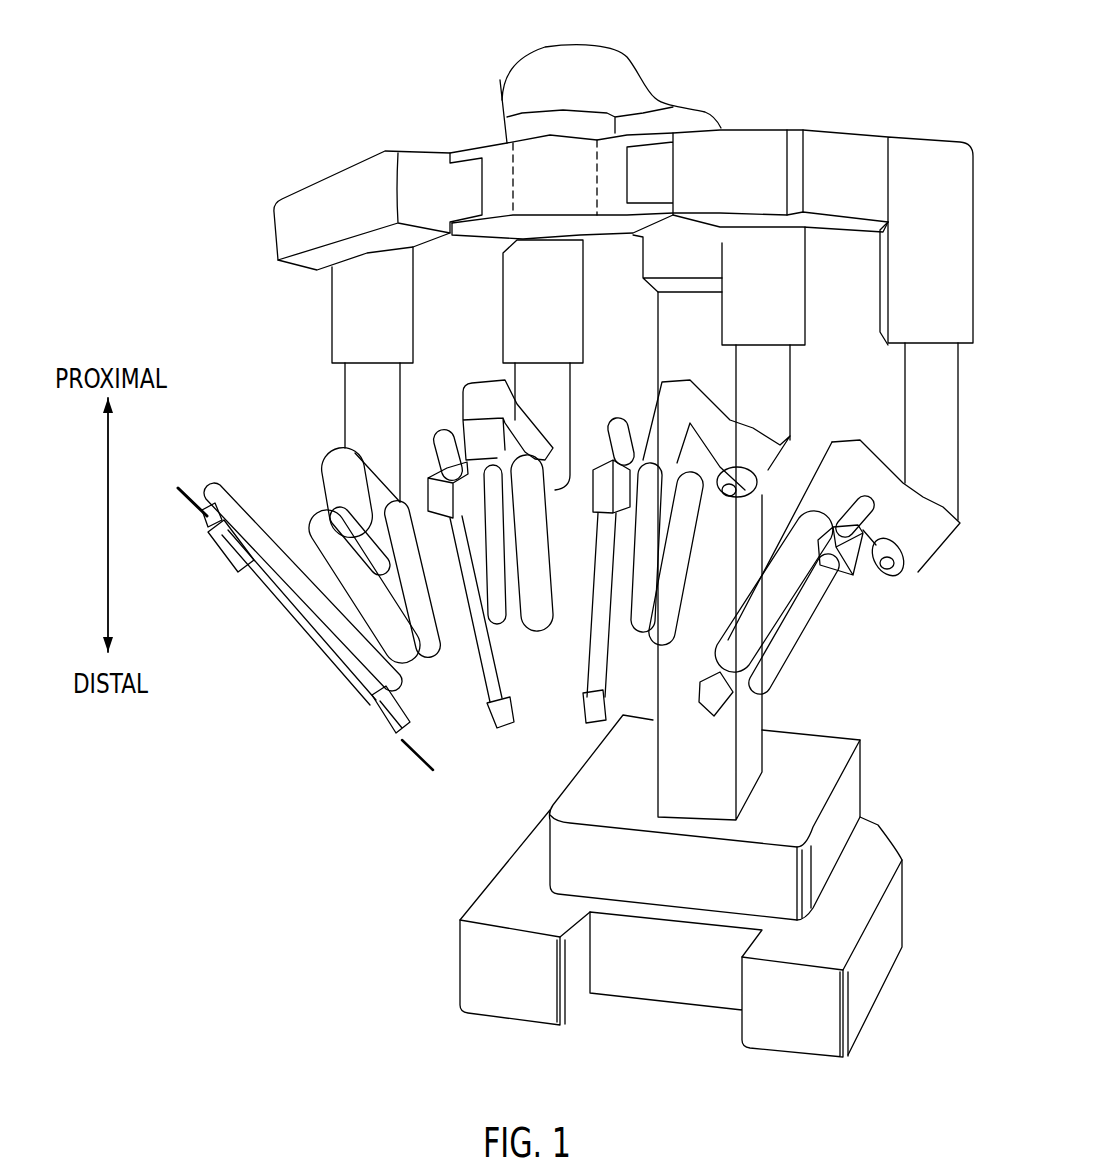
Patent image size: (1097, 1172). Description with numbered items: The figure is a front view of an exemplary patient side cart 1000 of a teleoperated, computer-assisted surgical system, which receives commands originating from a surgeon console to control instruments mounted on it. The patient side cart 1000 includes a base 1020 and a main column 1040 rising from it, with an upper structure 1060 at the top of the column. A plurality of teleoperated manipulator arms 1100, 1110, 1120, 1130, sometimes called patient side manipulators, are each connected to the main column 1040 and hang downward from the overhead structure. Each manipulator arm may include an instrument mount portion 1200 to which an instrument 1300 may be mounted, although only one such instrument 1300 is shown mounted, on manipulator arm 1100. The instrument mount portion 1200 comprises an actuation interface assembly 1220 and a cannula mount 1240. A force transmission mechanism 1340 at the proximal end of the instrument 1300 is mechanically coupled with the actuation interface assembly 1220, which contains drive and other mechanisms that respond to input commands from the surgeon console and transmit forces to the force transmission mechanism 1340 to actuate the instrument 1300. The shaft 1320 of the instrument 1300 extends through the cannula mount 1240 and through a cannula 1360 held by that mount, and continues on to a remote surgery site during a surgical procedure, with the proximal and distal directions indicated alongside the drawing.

The patient side cart 1000 is at (262, 72).
The base 1020 is at (847, 743).
The main column 1040 is at (663, 778).
The boom / top structure 1060 is at (673, 108).
The teleoperated manipulator arm 1100 is at (300, 437).
The teleoperated manipulator arm 1110 is at (455, 372).
The teleoperated manipulator arm 1120 is at (630, 388).
The teleoperated manipulator arm 1130 is at (847, 423).
The instrument mount portion 1200 is at (289, 578).
The actuation interface assembly 1220 is at (232, 557).
The cannula mount 1240 is at (387, 737).
The instrument 1300 is at (300, 642).
The shaft 1320 is at (275, 598).
The force transmission mechanism 1340 is at (207, 517).
The cannula 1360 is at (403, 747).